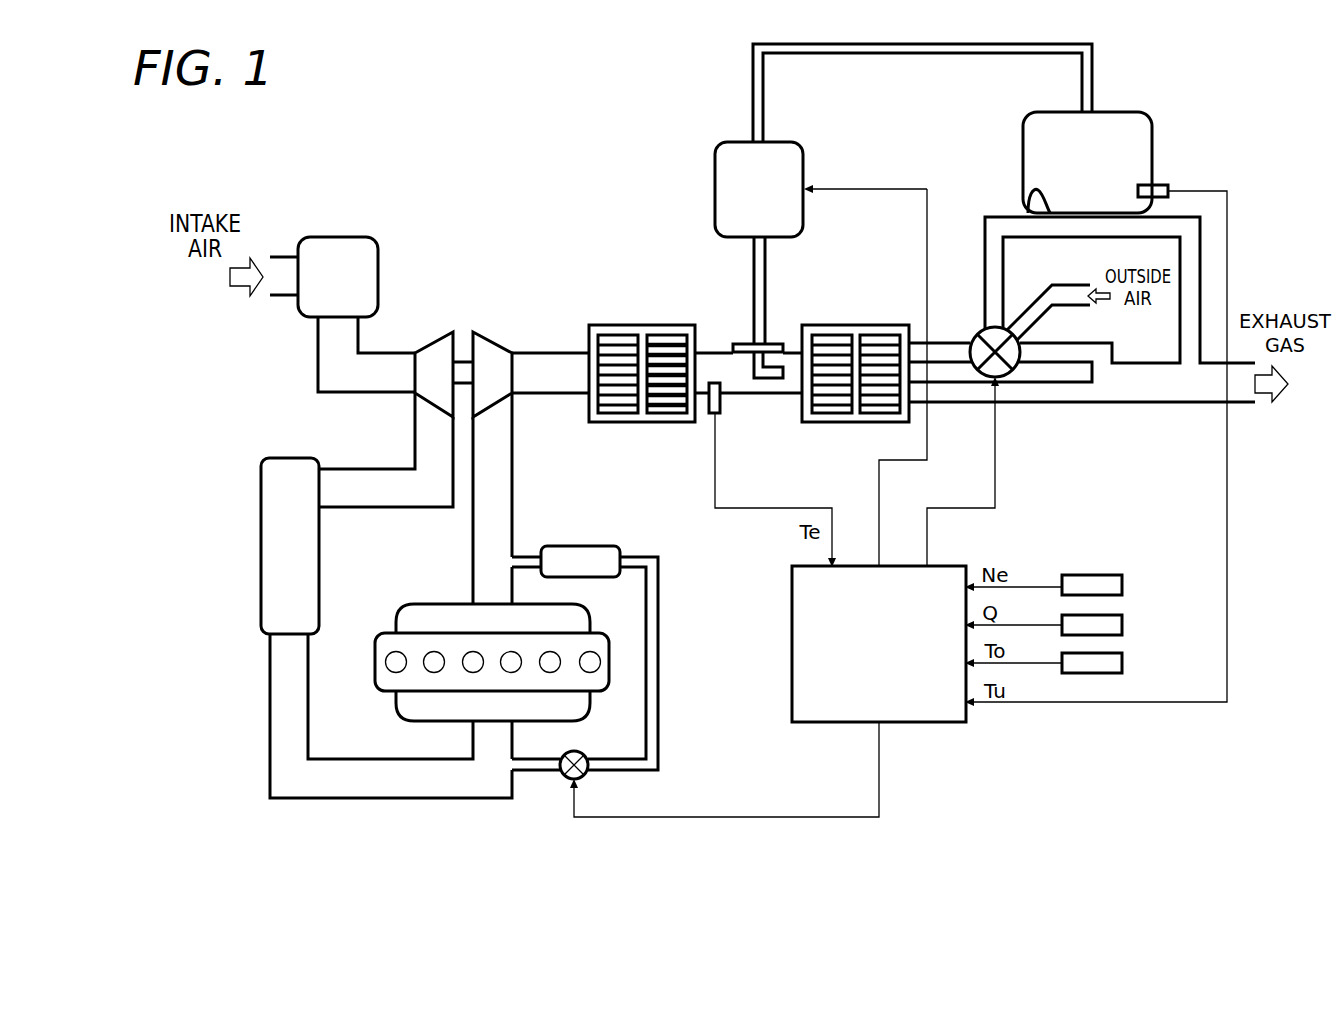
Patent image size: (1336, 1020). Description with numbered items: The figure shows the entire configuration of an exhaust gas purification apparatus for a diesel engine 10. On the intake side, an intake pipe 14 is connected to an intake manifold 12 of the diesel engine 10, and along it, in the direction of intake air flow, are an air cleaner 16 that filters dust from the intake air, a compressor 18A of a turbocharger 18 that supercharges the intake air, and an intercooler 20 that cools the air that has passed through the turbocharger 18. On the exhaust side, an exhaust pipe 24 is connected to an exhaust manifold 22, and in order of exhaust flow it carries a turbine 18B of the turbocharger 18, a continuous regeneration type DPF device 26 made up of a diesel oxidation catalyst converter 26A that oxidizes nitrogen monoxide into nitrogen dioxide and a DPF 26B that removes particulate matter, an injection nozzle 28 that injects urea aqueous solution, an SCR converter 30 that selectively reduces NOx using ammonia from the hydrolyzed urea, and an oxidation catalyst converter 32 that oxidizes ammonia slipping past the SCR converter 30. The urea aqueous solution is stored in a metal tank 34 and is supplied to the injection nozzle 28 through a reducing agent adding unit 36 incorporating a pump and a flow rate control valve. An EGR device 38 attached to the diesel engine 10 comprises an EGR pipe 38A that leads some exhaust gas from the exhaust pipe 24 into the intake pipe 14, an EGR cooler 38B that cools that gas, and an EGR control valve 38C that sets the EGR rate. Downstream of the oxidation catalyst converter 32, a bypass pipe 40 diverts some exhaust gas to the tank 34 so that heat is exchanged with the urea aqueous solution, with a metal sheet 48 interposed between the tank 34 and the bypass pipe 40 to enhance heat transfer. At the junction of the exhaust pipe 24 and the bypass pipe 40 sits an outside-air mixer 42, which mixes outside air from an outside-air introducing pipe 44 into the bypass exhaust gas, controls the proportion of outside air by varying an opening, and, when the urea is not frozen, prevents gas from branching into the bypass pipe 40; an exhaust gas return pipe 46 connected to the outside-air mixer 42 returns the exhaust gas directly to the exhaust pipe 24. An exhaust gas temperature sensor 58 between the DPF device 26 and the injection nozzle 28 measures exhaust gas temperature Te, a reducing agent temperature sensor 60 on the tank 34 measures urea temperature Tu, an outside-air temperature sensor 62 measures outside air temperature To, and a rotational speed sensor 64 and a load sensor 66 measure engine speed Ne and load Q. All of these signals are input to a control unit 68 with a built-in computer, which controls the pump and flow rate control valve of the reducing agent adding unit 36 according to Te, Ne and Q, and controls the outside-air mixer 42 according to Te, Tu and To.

The diesel engine 10 is at (380, 633).
The intake manifold 12 is at (400, 718).
The intake pipe 14 is at (351, 798).
The air cleaner 16 is at (336, 237).
The turbocharger 18 is at (457, 329).
The compressor 18A is at (437, 333).
The turbine 18B is at (489, 350).
The intercooler 20 is at (262, 460).
The exhaust manifold 22 is at (590, 615).
The exhaust pipe 24 is at (549, 397).
The continuous regeneration type diesel particulate filter (DPF) device 26 is at (638, 329).
The diesel oxidation catalyst (DOC) converter 26A is at (614, 340).
The DPF 26B is at (664, 345).
The injection nozzle 28 is at (766, 378).
The SCR converter 30 is at (830, 340).
The oxidation catalyst converter 32 is at (883, 340).
The tank 34 is at (1023, 137).
The reducing agent adding unit 36 is at (725, 140).
The exhaust gas recirculation (EGR) device 38 is at (622, 648).
The EGR pipe 38A is at (660, 640).
The EGR cooler 38B is at (577, 546).
The EGR control valve 38C is at (590, 775).
The bypass pipe 40 is at (985, 230).
The outside-air mixer 42 is at (975, 338).
The outside-air introducing pipe 44 is at (1045, 290).
The exhaust gas return pipe 46 is at (1057, 343).
The metal sheet 48 is at (1027, 203).
The exhaust gas temperature sensor 58 is at (712, 415).
The reducing agent temperature sensor 60 is at (1160, 183).
The outside-air temperature sensor 62 is at (1122, 663).
The rotational speed sensor 64 is at (1122, 585).
The load sensor 66 is at (1122, 625).
The control unit 68 is at (792, 606).